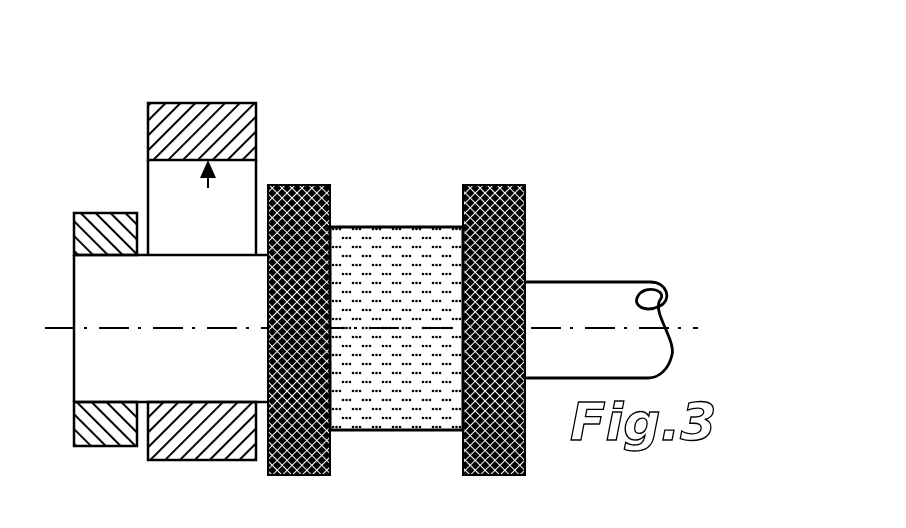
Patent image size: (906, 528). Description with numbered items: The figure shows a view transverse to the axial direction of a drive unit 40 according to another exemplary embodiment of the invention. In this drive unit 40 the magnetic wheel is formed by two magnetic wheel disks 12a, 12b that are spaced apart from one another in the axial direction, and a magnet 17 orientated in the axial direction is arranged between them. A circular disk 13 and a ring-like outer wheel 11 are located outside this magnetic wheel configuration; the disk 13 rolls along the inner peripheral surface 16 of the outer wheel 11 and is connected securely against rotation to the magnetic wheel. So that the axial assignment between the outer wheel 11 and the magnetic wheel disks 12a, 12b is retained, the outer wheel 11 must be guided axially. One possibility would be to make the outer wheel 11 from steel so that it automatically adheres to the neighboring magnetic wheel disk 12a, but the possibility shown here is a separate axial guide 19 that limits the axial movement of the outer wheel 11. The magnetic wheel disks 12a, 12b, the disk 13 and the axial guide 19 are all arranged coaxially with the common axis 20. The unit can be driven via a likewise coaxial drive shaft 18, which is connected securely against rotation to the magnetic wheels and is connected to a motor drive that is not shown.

The outer wheel 11 is at (207, 103).
The magnetic wheel disk 12a is at (313, 185).
The magnetic wheel disk 12b is at (494, 185).
The circular disk 13 is at (222, 317).
The inner peripheral surface 16 is at (202, 207).
The magnet 17 is at (388, 255).
The drive shaft 18 is at (597, 295).
The axial guide 19 is at (114, 212).
The common axis 20 is at (685, 320).
The drive unit 40 is at (662, 204).